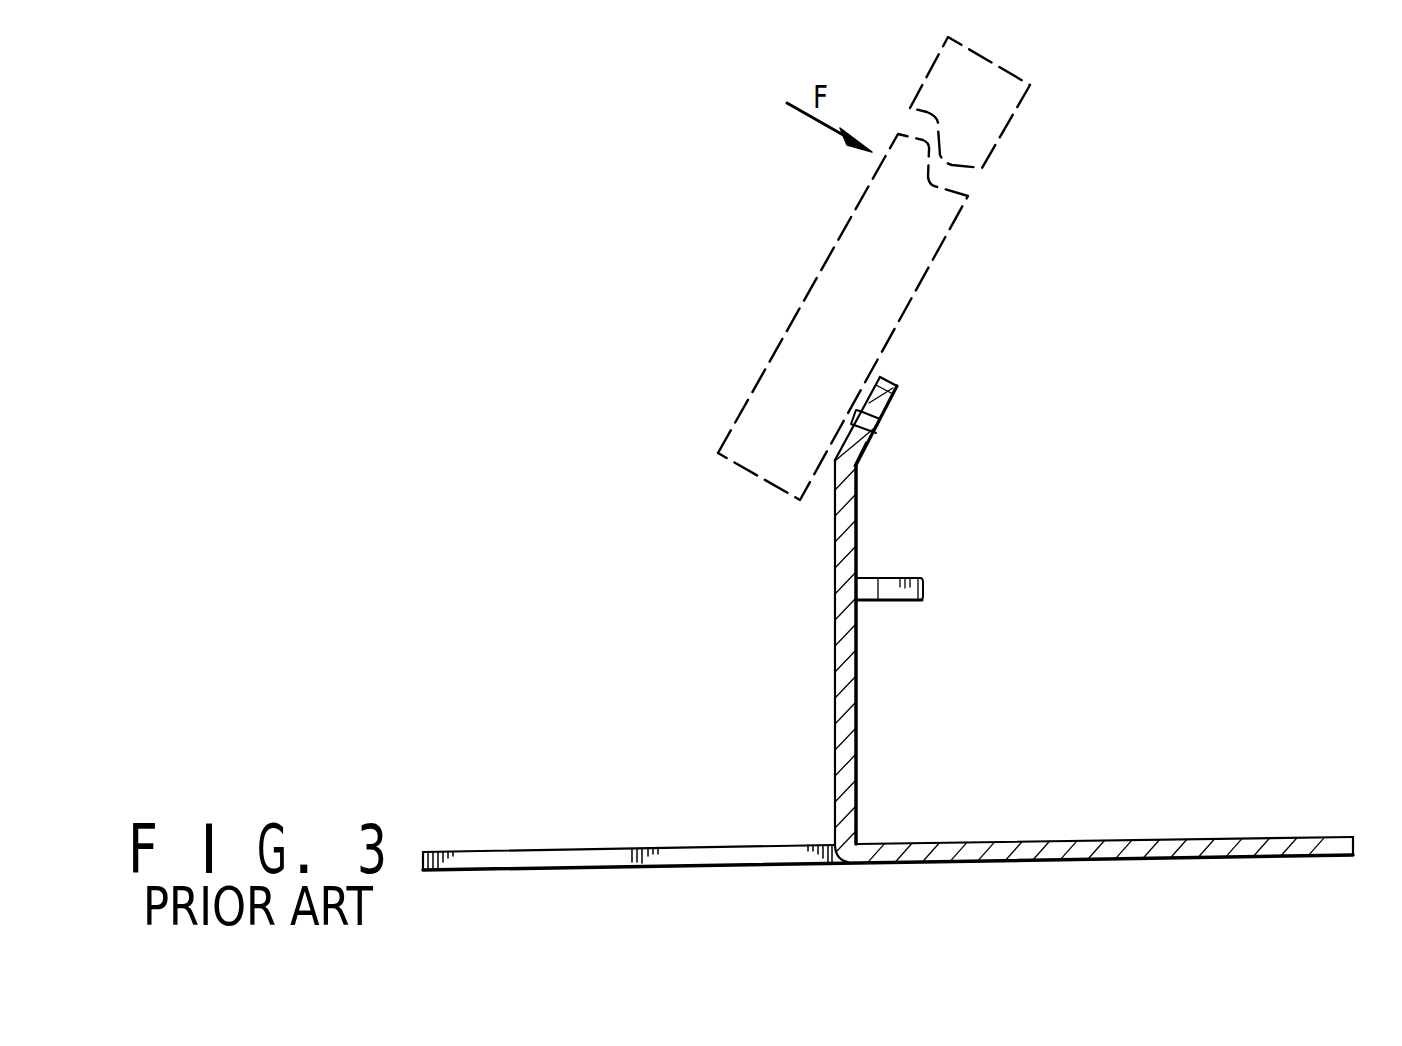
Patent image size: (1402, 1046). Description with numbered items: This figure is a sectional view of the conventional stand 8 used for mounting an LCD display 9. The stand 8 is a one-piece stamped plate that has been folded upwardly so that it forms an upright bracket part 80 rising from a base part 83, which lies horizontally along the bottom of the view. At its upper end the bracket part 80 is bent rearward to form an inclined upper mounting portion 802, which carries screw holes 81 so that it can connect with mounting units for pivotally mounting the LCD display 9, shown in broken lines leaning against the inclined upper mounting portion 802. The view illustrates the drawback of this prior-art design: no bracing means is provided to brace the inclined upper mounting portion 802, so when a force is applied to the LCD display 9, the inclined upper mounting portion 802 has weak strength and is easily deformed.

The conventional stand 8 is at (888, 623).
The upright bracket part 80 is at (850, 725).
The inclined upper mounting portion 802 is at (897, 388).
The screw holes 81 is at (879, 430).
The base part 83 is at (1030, 843).
The LCD display 9 is at (1040, 153).